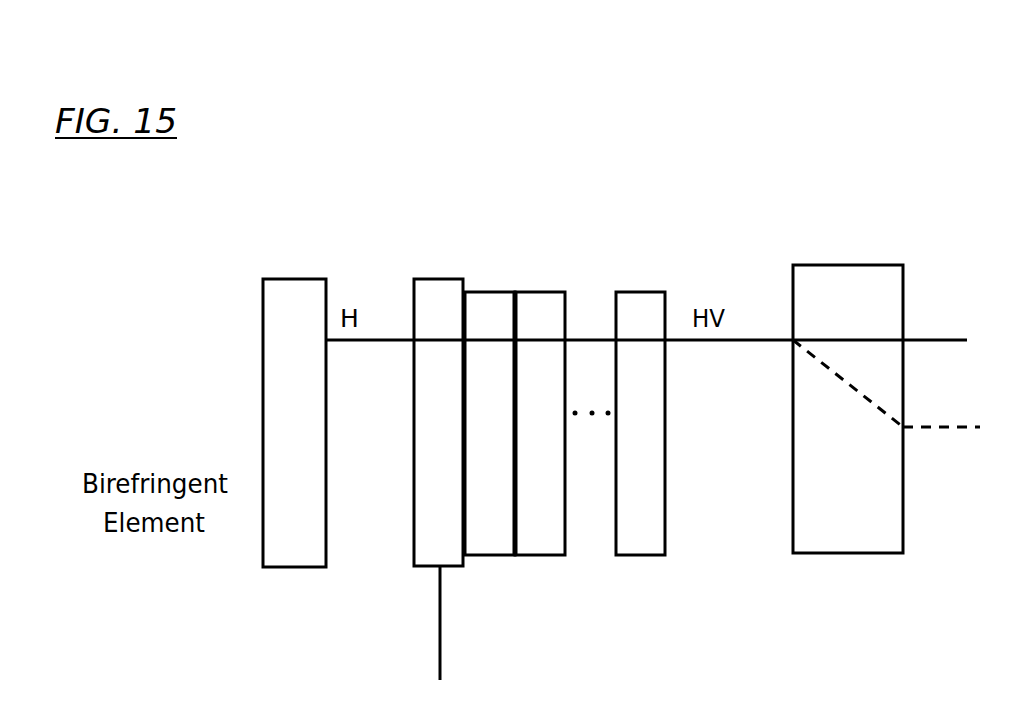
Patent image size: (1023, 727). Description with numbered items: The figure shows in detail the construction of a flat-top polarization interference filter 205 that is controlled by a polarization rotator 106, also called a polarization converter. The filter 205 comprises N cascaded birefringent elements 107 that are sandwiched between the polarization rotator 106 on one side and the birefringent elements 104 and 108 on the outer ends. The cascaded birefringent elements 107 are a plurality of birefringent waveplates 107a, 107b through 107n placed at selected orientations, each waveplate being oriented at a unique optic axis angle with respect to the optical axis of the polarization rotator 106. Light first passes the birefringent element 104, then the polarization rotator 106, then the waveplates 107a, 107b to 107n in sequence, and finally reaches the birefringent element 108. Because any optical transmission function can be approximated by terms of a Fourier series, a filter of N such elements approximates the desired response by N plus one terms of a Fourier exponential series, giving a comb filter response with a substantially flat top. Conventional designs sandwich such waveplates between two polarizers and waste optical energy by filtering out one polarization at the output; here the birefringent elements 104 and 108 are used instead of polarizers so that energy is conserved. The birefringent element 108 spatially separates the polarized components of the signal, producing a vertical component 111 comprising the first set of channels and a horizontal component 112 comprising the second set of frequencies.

The birefringent element 104 is at (236, 489).
The polarization rotator 106 is at (427, 279).
The birefringent elements 107 is at (586, 365).
The birefringent waveplate 107a is at (478, 556).
The birefringent waveplate 107b is at (543, 556).
The birefringent waveplate 107n is at (640, 556).
The birefringent element 108 is at (857, 583).
The vertical component 111 is at (875, 340).
The horizontal component 112 is at (888, 418).
The filter 205 is at (644, 373).